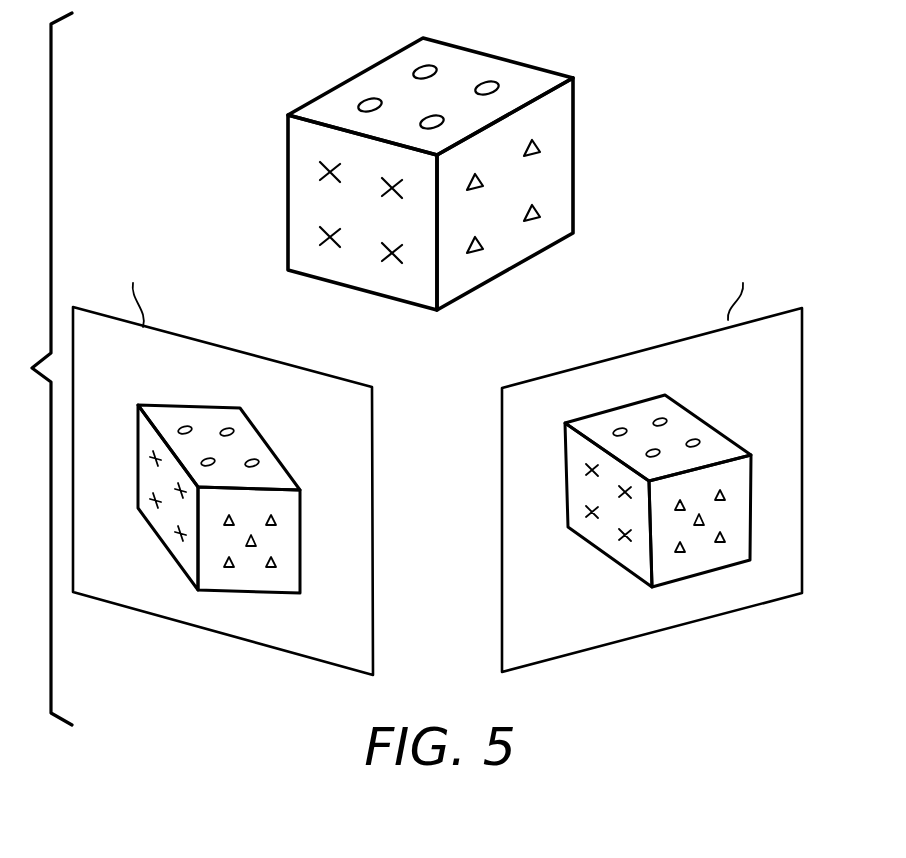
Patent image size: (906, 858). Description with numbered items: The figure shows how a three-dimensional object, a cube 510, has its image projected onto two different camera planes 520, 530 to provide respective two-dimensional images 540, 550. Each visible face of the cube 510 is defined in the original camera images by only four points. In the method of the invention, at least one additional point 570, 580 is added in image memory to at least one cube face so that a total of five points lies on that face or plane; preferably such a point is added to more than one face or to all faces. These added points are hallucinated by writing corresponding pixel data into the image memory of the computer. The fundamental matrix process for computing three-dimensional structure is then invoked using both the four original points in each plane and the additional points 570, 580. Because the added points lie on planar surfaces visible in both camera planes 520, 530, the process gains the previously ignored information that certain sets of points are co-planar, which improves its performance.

The cube 510 is at (528, 75).
The camera plane 520 is at (372, 387).
The camera plane 530 is at (502, 388).
The 2-dimensional image 540 is at (303, 497).
The 2-dimensional image 550 is at (730, 433).
The additional point 570 is at (700, 532).
The additional point 580 is at (251, 552).